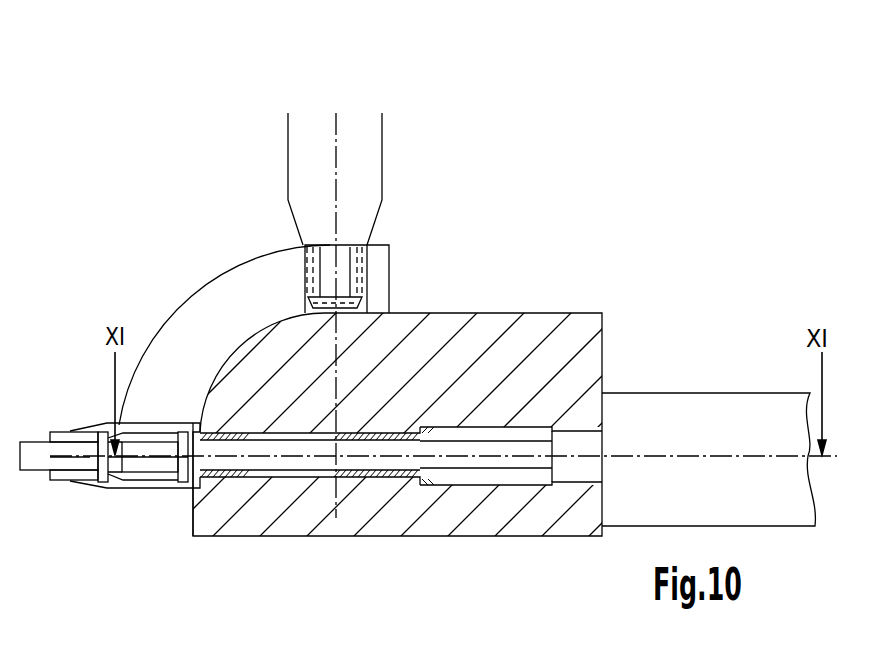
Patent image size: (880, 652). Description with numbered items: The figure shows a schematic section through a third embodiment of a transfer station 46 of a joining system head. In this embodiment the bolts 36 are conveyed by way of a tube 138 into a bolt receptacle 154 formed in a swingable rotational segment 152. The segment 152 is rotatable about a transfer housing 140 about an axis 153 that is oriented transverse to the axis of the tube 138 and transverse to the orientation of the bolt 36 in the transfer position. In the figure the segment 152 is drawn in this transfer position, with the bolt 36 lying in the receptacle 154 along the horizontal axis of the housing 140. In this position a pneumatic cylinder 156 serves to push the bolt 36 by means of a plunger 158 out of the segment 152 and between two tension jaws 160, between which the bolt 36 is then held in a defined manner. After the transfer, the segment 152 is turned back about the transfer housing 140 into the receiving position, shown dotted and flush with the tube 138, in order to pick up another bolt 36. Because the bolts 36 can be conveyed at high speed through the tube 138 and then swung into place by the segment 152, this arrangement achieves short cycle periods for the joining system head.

The bolt 36 is at (337, 270).
The transfer station 46 is at (644, 160).
The tube 138 is at (383, 134).
The transfer housing 140 is at (523, 340).
The swingable rotational segment 152 is at (205, 323).
The axis 153 is at (345, 458).
The bolt receptacle 154 is at (305, 272).
The pneumatic cylinder 156 is at (691, 378).
The plunger 158 is at (380, 453).
The tension jaws 160 is at (70, 430).